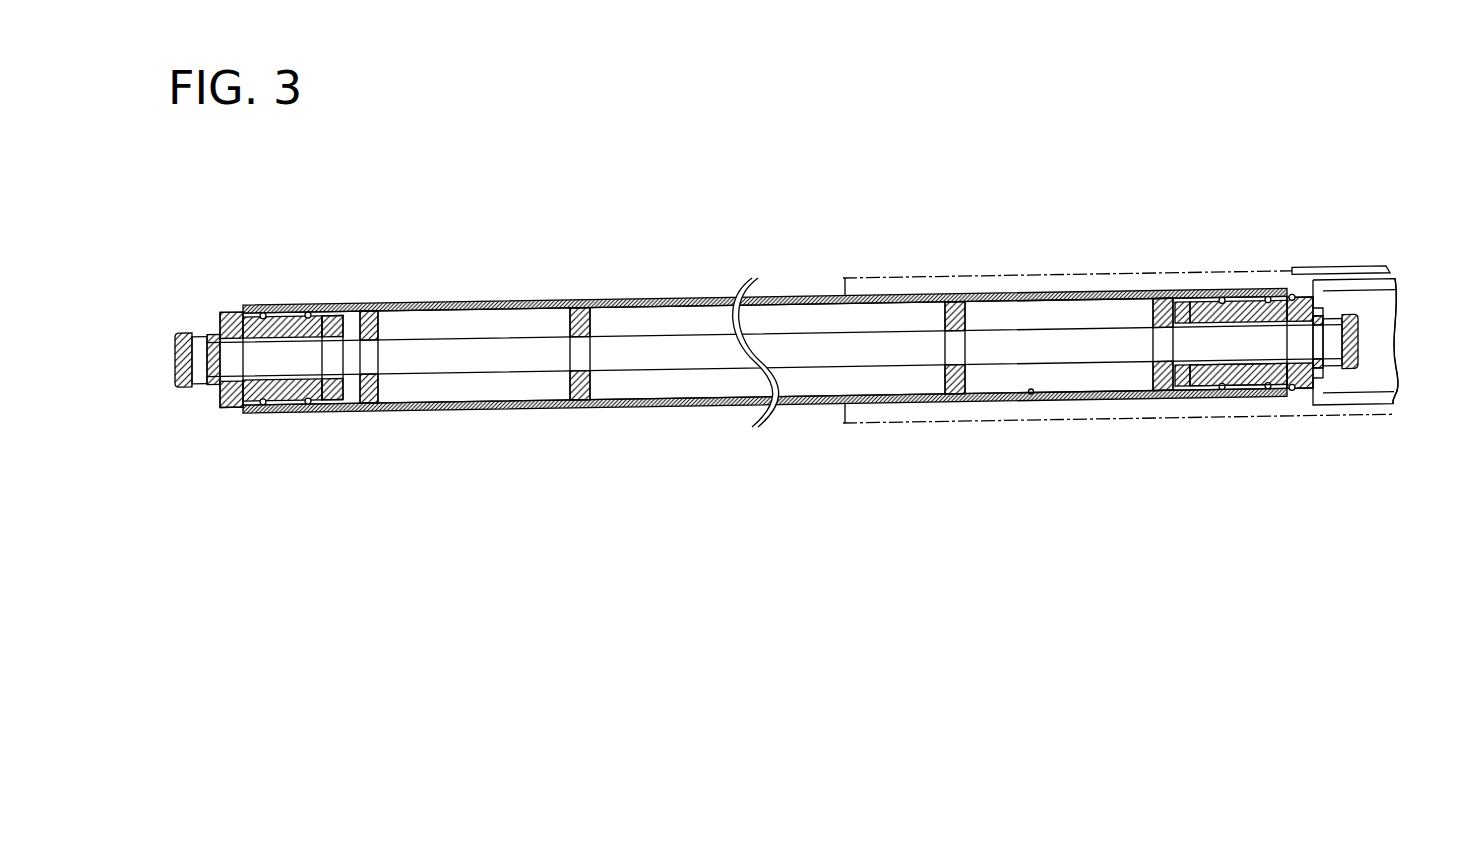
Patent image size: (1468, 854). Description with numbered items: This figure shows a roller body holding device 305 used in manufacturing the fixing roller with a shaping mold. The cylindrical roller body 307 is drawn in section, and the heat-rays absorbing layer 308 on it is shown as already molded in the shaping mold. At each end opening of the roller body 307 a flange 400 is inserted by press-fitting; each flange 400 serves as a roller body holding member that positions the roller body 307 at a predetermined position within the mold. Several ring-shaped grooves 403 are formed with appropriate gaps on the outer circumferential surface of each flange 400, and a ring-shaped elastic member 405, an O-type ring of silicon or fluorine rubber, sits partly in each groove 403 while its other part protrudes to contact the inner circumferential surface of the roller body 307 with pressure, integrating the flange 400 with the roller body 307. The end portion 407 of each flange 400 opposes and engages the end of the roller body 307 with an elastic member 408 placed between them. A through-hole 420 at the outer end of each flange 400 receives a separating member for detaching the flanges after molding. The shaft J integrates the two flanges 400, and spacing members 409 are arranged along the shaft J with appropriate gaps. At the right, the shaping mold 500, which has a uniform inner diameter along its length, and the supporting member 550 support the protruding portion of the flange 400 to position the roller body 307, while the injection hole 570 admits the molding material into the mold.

The shaft assembly 305 is at (815, 370).
The roller body 307 is at (1030, 392).
The heat-rays absorbing layer 308 is at (1102, 395).
The shaft J is at (688, 358).
The flange 400 is at (293, 303).
The ring-shaped groove 403 is at (1245, 392).
The ring-shaped elastic member 405 is at (267, 407).
The end portion 407 is at (230, 406).
The elastic member 408 is at (1293, 297).
The bearing 409 is at (372, 406).
The through-hole 420 is at (197, 384).
The shaping mold 500 is at (1375, 268).
The supporting member 550 is at (1378, 319).
The injection hole 570 is at (1397, 395).